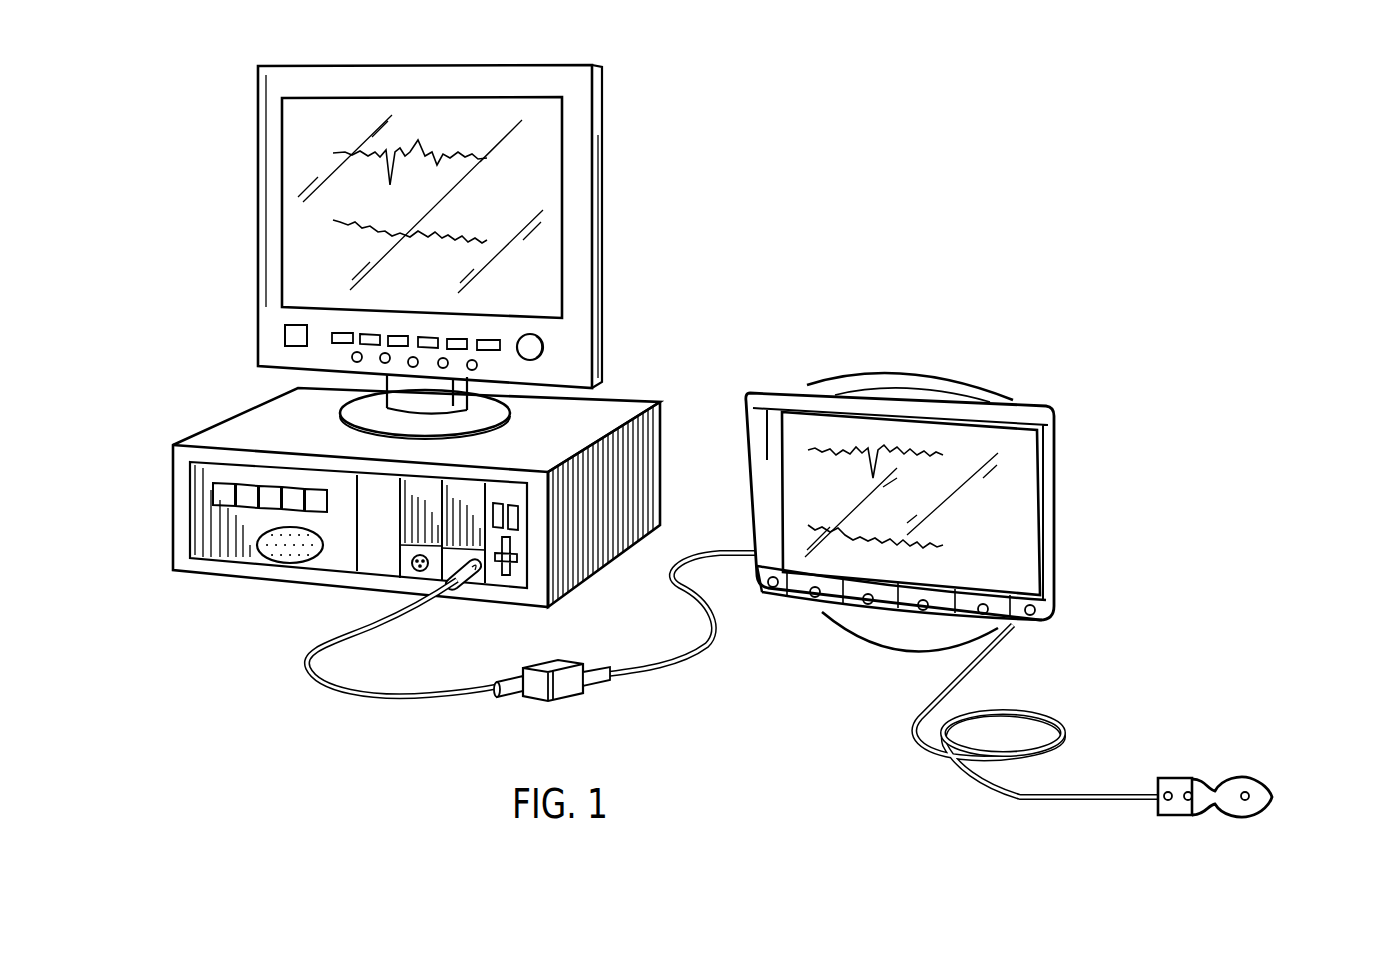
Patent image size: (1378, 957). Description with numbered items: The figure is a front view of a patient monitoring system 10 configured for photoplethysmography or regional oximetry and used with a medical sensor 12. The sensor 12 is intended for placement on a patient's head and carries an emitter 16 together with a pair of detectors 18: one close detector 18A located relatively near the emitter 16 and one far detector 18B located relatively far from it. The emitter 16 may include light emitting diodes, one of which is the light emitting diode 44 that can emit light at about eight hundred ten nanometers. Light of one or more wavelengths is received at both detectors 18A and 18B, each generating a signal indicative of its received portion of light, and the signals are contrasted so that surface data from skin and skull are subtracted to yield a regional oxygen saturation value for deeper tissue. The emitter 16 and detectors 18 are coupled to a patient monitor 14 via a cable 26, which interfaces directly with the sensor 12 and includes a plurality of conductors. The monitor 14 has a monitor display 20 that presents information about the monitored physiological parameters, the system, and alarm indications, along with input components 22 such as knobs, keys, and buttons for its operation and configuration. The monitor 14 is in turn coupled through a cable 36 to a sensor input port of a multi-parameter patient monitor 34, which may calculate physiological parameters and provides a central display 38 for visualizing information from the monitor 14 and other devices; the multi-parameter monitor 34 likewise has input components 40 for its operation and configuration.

The patient monitoring system 10 is at (950, 278).
The medical sensor 12 is at (1299, 738).
The patient monitor 14 is at (1018, 400).
The emitter 16 is at (1245, 801).
The detectors 18 is at (1181, 806).
The close detector 18A is at (1188, 801).
The far detector 18B is at (1168, 791).
The monitor display 20 is at (996, 468).
The input components 22 is at (1038, 591).
The cable 26 is at (947, 780).
The multi-parameter patient monitor 34 is at (642, 278).
The cable 36 is at (657, 675).
The central display 38 is at (308, 245).
The input components 40 is at (240, 493).
The light emitting diode 44 is at (1243, 801).